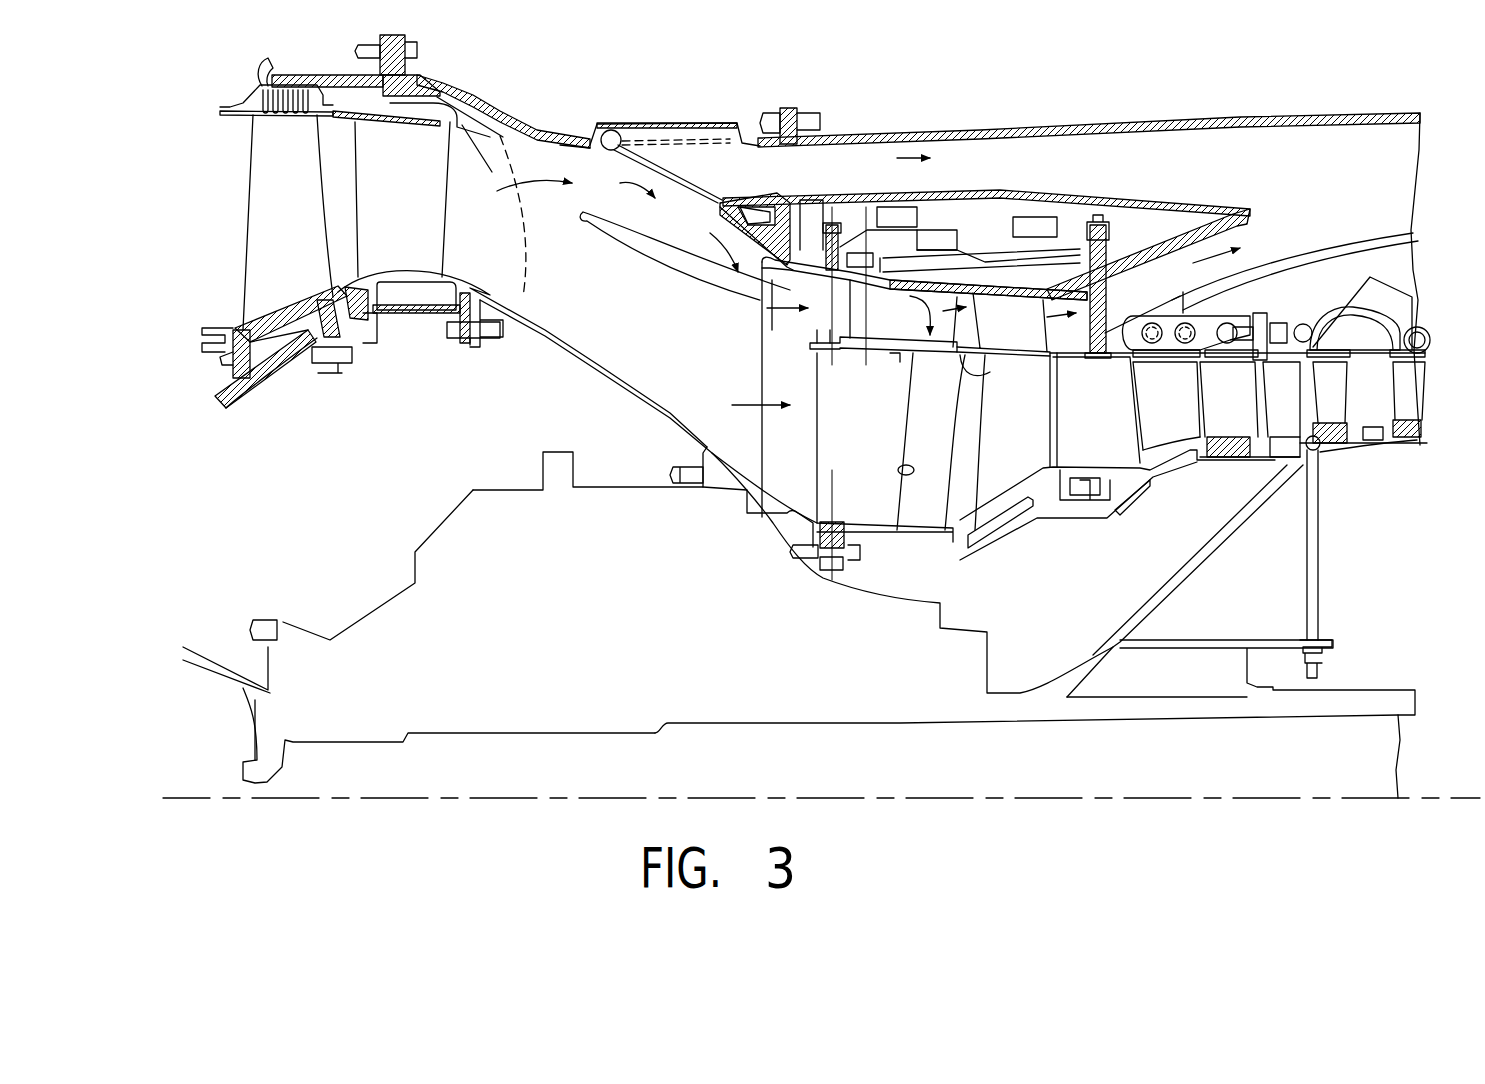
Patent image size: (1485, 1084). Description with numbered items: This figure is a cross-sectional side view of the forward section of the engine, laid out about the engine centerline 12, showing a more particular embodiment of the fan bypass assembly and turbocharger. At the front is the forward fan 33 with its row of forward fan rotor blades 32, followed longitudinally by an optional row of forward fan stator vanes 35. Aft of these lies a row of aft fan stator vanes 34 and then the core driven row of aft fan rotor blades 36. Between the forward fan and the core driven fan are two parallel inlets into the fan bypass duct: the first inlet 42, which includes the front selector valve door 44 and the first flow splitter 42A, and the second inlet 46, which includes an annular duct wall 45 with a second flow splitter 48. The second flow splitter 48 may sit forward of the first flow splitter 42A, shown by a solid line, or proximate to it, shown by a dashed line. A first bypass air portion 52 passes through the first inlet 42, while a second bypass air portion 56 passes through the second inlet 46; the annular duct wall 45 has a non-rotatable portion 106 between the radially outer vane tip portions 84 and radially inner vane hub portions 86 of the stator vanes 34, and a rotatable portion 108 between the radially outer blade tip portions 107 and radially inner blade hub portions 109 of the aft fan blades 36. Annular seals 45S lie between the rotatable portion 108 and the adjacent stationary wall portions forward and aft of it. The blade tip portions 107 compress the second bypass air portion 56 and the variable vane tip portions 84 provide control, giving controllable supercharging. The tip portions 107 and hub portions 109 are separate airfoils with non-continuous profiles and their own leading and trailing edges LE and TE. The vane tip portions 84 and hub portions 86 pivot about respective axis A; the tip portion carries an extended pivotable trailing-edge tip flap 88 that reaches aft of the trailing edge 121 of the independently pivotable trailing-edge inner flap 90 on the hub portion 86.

The centerline 12 is at (1055, 799).
The forward fan rotor blades 32 is at (270, 220).
The forward fan 33 is at (320, 419).
The aft fan stator vanes 34 is at (803, 521).
The forward fan stator vanes 35 is at (380, 218).
The aft fan rotor blades 36 is at (990, 527).
The first inlet 42 is at (616, 166).
The first flow splitter 42A is at (722, 203).
The front selector valve door 44 is at (650, 145).
The annular duct wall 45 is at (910, 296).
The annular seals 45S is at (1078, 355).
The second inlet 46 is at (497, 191).
The second flow splitter 48 is at (590, 218).
The first bypass air portion 52 is at (897, 159).
The second bypass air portion 56 is at (710, 229).
The radially outer vane tip portions 84 is at (767, 308).
The radially inner vane hub portions 86 is at (732, 405).
The pivotable trailing-edge tip flap 88 is at (876, 337).
The pivotable trailing-edge inner flap 90 is at (843, 444).
The non-rotatable portion 106 is at (897, 362).
The radially outer blade tip portions 107 is at (994, 350).
The rotatable portion 108 is at (992, 353).
The radially inner blade hub portions 109 is at (985, 456).
The trailing edge 121 is at (898, 471).
The axis A is at (843, 225).
The leading edge LE is at (962, 412).
The trailing edge TE is at (1070, 372).